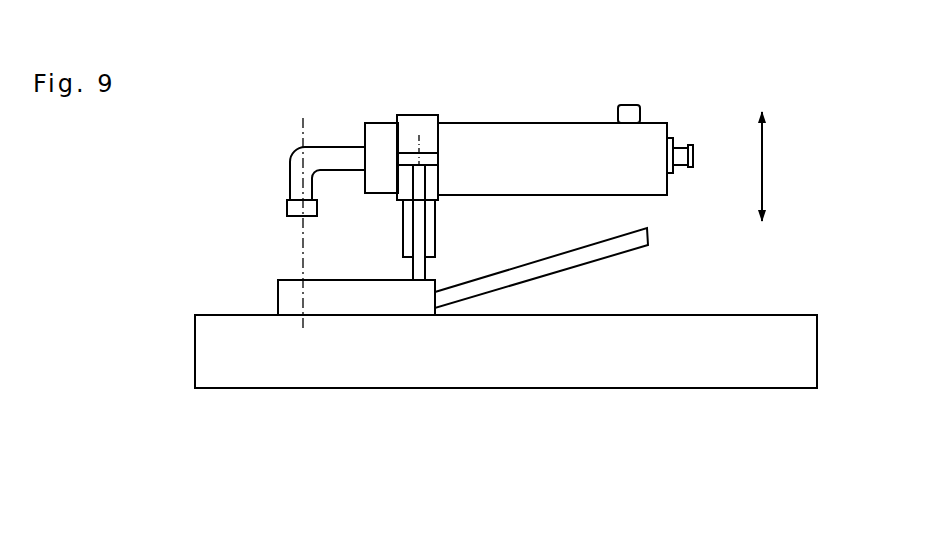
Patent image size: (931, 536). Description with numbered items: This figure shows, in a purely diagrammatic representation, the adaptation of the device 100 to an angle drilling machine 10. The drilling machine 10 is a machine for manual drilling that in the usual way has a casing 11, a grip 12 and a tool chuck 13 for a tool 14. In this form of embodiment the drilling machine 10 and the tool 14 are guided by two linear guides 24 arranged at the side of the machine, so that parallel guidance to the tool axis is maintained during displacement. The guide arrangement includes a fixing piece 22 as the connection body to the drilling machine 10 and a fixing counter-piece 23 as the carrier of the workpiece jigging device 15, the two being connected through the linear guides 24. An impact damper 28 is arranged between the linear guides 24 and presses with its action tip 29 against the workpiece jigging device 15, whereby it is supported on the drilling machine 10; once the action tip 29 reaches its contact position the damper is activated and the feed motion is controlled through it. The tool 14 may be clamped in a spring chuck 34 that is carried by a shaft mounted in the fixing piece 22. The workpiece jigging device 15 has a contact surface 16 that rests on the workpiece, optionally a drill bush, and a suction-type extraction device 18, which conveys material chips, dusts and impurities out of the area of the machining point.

The drilling machine 10 is at (575, 95).
The casing 11 is at (480, 127).
The grip 12 is at (552, 159).
The tool chuck 13 is at (272, 209).
The tool 14 is at (298, 247).
The workpiece jigging device 15 is at (288, 285).
The contact surface 16 is at (290, 316).
The suction-type extraction device 18 is at (583, 263).
The fixing piece 22 is at (413, 127).
The fixing counter-piece 23 is at (435, 283).
The linear guides 24 is at (407, 222).
The impact damper 28 is at (417, 242).
The action tip 29 is at (418, 282).
The spring chuck 34 is at (295, 205).
The device 100 is at (203, 265).